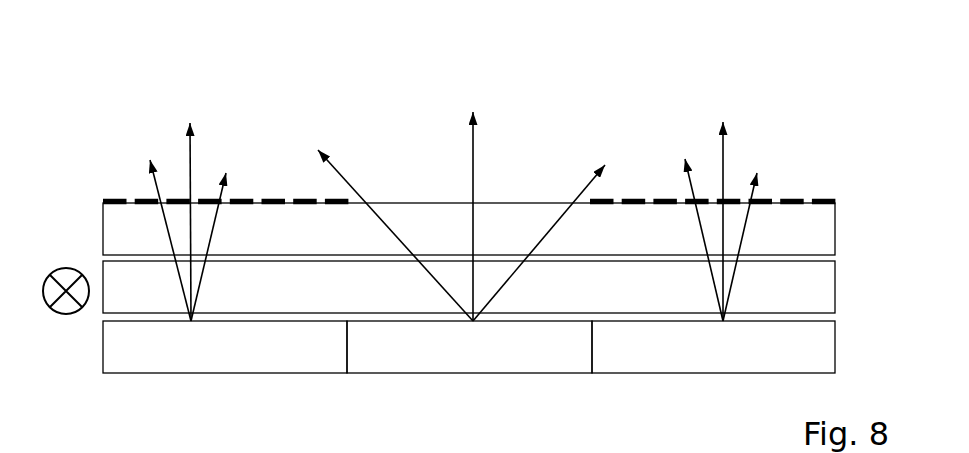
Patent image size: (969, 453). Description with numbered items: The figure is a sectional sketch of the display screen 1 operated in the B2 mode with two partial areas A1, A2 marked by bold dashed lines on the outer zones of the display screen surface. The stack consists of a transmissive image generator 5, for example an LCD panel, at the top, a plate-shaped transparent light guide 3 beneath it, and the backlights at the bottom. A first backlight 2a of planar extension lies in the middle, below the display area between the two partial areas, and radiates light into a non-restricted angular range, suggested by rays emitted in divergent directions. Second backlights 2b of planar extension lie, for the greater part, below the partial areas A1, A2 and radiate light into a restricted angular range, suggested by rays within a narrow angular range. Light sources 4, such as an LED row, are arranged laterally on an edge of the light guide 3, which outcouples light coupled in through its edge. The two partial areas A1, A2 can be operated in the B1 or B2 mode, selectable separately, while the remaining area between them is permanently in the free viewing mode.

The display screen 1 is at (493, 288).
The first backlight 2a is at (469, 347).
The second backlight 2b is at (469, 347).
The light guide 3 is at (469, 287).
The light sources 4 is at (62, 268).
The image generator 5 is at (469, 229).
The first partial area A1 is at (282, 200).
The second partial area A2 is at (675, 200).